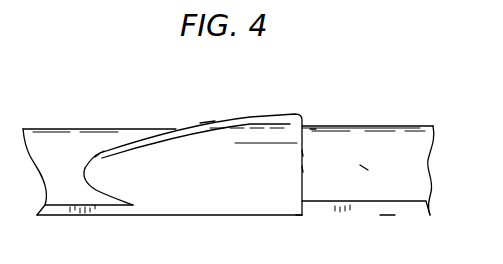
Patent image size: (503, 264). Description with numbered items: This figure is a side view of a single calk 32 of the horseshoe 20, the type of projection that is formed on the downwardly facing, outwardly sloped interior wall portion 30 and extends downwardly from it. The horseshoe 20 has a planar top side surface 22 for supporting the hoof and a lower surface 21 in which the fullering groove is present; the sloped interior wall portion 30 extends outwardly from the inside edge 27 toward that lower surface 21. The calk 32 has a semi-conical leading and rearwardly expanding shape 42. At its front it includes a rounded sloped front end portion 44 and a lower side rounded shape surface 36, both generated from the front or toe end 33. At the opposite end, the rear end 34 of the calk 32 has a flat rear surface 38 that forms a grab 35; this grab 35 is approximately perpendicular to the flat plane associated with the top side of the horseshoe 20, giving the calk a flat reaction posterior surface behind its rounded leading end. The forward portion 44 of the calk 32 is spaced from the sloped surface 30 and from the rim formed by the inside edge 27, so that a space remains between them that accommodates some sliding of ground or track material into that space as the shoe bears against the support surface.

The horseshoe 20 is at (252, 156).
The lower surface 21 is at (393, 125).
The planar top side surface 22 is at (387, 215).
The inside edge 27 is at (302, 215).
The sloped interior wall portion 30 is at (365, 168).
The calk 32 is at (187, 128).
The front or toe end 33 is at (83, 166).
The rear end 34 is at (302, 155).
The grab 35 is at (313, 132).
The lower side rounded shape surface 36 is at (100, 152).
The flat rear surface 38 is at (302, 170).
The semi-conical leading and rearwardly expanding shape 42 is at (207, 122).
The rounded sloped front end portion 44 is at (95, 156).